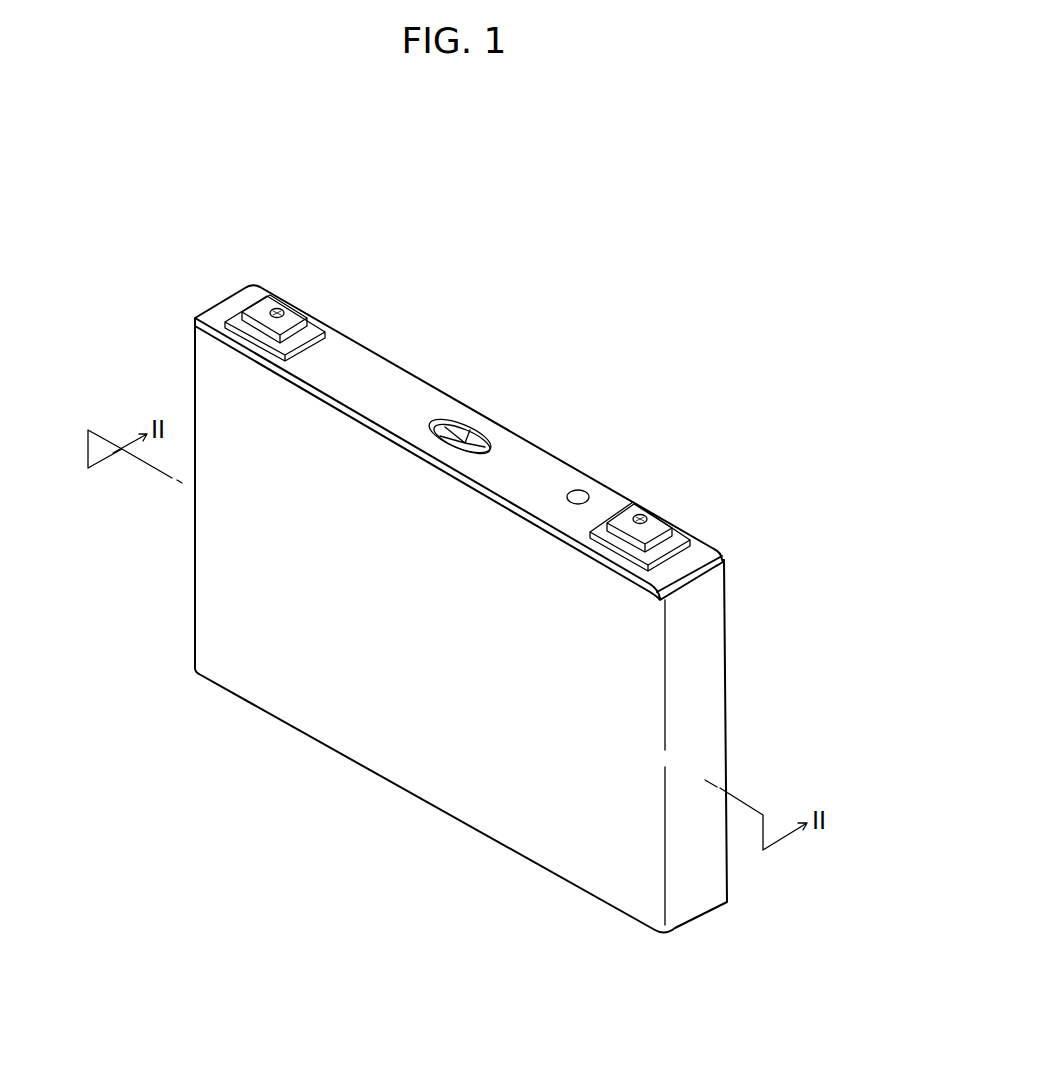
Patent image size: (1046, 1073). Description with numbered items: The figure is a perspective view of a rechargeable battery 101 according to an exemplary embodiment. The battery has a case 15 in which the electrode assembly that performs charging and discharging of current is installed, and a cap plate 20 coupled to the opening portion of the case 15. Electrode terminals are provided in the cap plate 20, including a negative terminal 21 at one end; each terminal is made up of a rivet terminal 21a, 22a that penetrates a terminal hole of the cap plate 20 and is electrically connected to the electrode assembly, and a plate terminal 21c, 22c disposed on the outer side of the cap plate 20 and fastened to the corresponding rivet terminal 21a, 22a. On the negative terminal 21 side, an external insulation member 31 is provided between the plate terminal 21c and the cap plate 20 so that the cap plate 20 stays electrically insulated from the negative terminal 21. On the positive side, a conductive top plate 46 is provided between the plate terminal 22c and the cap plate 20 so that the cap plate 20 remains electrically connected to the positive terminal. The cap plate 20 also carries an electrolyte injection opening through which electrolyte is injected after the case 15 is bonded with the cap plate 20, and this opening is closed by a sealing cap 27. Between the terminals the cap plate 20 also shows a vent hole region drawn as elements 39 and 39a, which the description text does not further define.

The rechargeable battery 101 is at (461, 547).
The case 15 is at (400, 752).
The cap plate 20 is at (372, 373).
The negative terminal 21 is at (265, 282).
The rivet terminal 21a is at (278, 310).
The plate terminal 21c is at (294, 318).
The external insulation member 31 is at (233, 320).
The vent hole 39 is at (443, 420).
The vent plate notch 39a is at (469, 437).
The sealing cap 27 is at (581, 491).
The rivet terminal 22a is at (641, 514).
The plate terminal 22c is at (660, 524).
The conductive top plate 46 is at (682, 528).